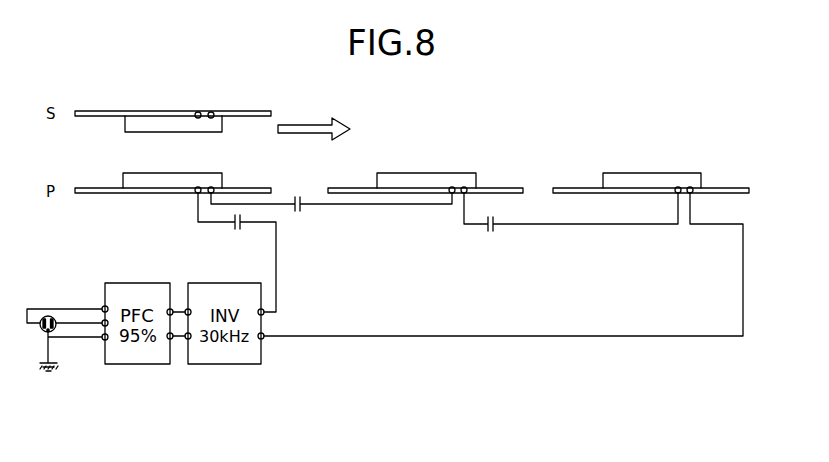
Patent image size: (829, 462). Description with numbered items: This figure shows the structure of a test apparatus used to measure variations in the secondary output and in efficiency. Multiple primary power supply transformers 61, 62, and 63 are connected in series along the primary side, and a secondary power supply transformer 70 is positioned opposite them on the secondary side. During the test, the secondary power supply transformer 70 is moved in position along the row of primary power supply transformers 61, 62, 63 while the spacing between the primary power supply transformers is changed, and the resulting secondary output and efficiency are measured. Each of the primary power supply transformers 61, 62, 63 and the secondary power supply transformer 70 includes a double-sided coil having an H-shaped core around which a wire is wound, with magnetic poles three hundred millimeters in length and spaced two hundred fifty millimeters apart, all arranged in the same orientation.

The secondary power supply transformer 70 is at (125, 118).
The primary power supply transformer 61 is at (222, 186).
The primary power supply transformer 62 is at (423, 173).
The primary power supply transformer 63 is at (648, 173).